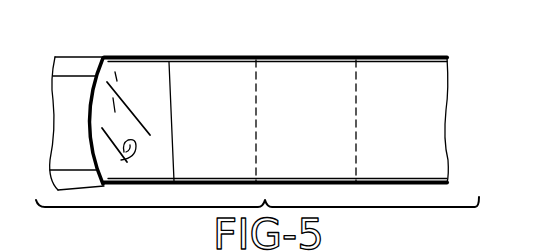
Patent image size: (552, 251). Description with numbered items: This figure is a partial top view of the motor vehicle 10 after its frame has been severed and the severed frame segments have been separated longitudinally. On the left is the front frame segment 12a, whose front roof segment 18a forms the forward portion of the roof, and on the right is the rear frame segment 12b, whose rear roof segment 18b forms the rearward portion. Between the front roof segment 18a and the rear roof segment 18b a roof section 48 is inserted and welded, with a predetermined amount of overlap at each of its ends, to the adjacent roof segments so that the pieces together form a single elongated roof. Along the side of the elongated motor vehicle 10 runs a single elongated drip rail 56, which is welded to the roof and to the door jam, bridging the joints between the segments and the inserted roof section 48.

The motor vehicle 10 is at (477, 42).
The front frame segment 12a is at (72, 63).
The rear frame segment 12b is at (377, 67).
The front roof segment 18a is at (185, 66).
The rear roof segment 18b is at (444, 97).
The roof section 48 is at (314, 140).
The drip rail 56 is at (267, 57).